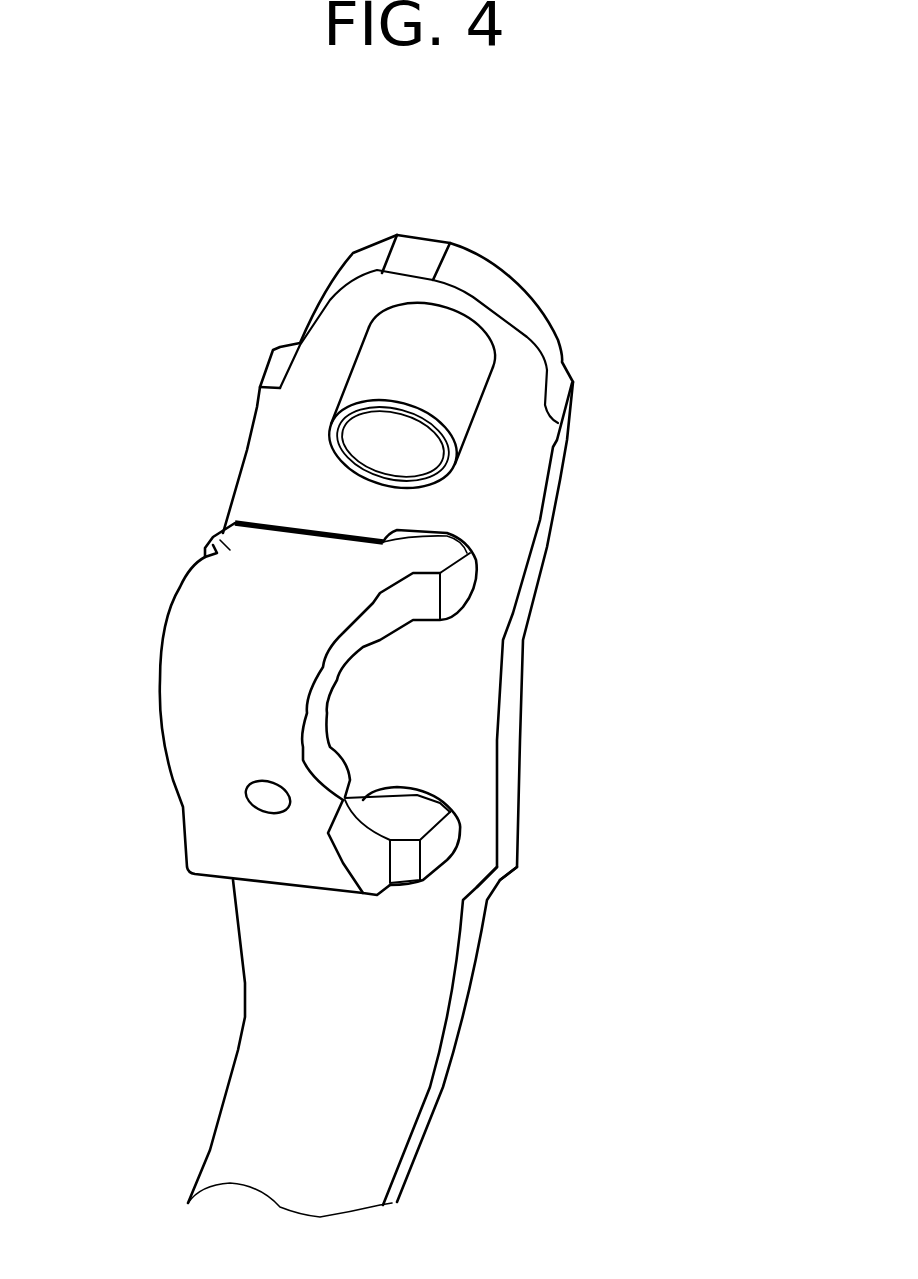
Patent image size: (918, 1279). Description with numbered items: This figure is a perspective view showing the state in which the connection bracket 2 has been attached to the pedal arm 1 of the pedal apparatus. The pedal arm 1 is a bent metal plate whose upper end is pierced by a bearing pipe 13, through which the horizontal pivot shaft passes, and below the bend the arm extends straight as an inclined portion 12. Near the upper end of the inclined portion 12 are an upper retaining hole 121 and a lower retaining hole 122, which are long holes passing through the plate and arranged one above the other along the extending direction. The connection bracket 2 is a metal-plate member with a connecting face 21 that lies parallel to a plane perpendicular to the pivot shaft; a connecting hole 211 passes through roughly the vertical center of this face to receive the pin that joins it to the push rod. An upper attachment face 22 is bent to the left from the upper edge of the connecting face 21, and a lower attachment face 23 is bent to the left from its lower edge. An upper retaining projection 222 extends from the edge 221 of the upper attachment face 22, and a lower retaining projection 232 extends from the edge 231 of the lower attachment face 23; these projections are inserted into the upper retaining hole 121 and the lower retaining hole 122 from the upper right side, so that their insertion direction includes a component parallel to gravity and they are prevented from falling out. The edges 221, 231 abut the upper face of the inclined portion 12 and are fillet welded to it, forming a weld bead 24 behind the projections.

The pedal arm 1 is at (348, 725).
The inclined portion 12 is at (442, 737).
The upper retaining hole 121 is at (467, 537).
The lower retaining hole 122 is at (453, 800).
The bearing pipe 13 is at (425, 327).
The connection bracket 2 is at (275, 690).
The connecting face 21 is at (228, 725).
The connecting hole 211 is at (243, 802).
The upper attachment face 22 is at (324, 633).
The edge of the upper attachment face 221 is at (340, 527).
The upper retaining projection 222 is at (430, 540).
The lower attachment face 23 is at (394, 810).
The edge of the lower attachment face 231 is at (350, 797).
The lower retaining projection 232 is at (413, 800).
The weld bead 24 is at (253, 520).